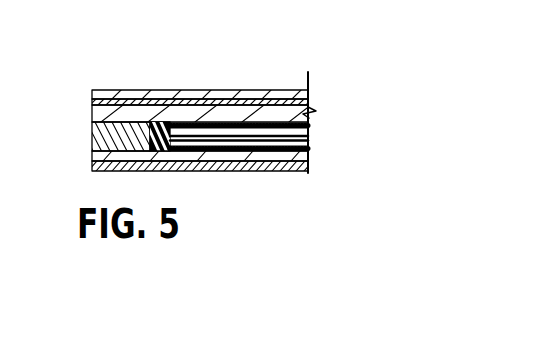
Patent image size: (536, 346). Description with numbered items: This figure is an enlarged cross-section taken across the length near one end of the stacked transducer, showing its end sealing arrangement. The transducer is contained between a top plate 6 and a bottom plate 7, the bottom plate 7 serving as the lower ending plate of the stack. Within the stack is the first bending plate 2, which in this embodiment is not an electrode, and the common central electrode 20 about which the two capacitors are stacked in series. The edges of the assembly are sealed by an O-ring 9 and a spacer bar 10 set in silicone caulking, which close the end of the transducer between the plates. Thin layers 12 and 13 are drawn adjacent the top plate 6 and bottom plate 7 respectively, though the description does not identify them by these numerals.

The first bending plate 2 is at (292, 113).
The top plate 6 is at (243, 90).
The bottom plate 7 is at (305, 155).
The O-ring 9 is at (153, 123).
The spacer bar 10 is at (97, 138).
The upper adhesive layer 12 is at (190, 105).
The lower adhesive layer 13 is at (271, 172).
The central electrode 20 is at (221, 141).